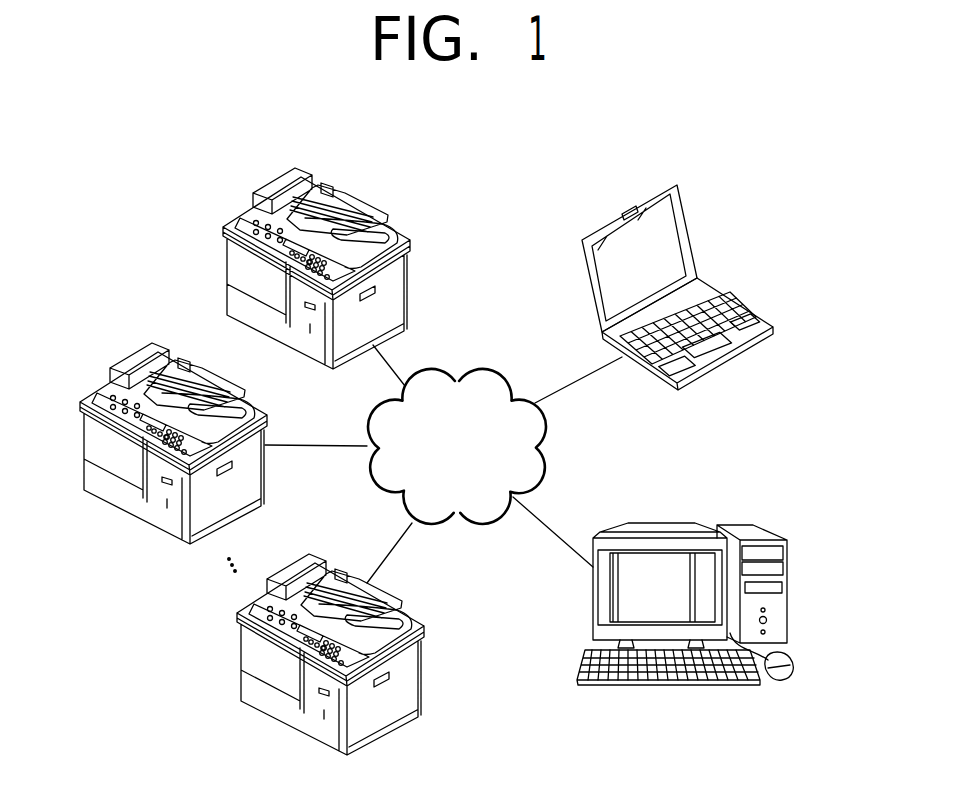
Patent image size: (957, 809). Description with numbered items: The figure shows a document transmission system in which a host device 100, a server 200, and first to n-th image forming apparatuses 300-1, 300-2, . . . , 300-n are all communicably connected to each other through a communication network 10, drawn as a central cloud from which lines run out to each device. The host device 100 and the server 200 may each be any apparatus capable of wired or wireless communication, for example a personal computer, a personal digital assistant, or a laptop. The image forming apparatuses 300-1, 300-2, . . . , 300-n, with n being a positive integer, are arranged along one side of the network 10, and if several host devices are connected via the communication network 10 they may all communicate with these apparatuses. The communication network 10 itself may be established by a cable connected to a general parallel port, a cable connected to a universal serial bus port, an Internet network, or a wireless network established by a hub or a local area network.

The communication network 10 is at (547, 428).
The host device 100 is at (737, 297).
The server 200 is at (788, 592).
The first image forming apparatus 300-1 is at (316, 244).
The second image forming apparatus 300-2 is at (173, 419).
The n-th image forming apparatus 300-n is at (330, 630).